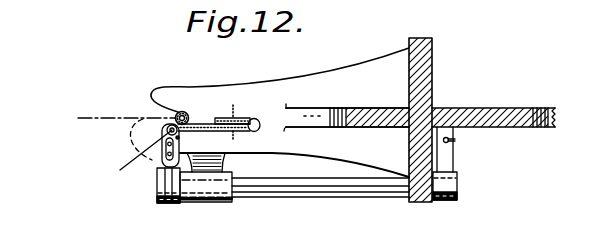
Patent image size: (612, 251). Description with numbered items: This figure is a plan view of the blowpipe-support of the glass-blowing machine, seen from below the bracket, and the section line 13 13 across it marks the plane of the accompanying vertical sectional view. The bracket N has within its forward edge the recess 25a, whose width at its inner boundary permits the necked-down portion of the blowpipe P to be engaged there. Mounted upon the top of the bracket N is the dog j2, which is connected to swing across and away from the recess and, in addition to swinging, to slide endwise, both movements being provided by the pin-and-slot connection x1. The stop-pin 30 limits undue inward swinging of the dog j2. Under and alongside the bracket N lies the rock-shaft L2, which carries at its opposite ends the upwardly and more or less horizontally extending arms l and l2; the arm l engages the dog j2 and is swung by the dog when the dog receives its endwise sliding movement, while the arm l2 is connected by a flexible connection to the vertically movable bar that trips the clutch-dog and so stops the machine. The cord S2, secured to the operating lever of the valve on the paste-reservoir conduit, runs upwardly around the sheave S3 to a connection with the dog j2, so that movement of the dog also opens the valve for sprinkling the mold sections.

The section line 13 13 is at (133, 115).
The blowpipe P is at (176, 117).
The recess 25a is at (184, 111).
The sheave S3 is at (225, 112).
The bracket N is at (332, 106).
The cord S2 is at (258, 122).
The stop-pin 30 is at (179, 138).
The dog j2 is at (136, 160).
The pin-and-slot connection x1 is at (163, 164).
The arm l is at (167, 192).
The rock-shaft L2 is at (316, 186).
The arm l2 is at (456, 155).